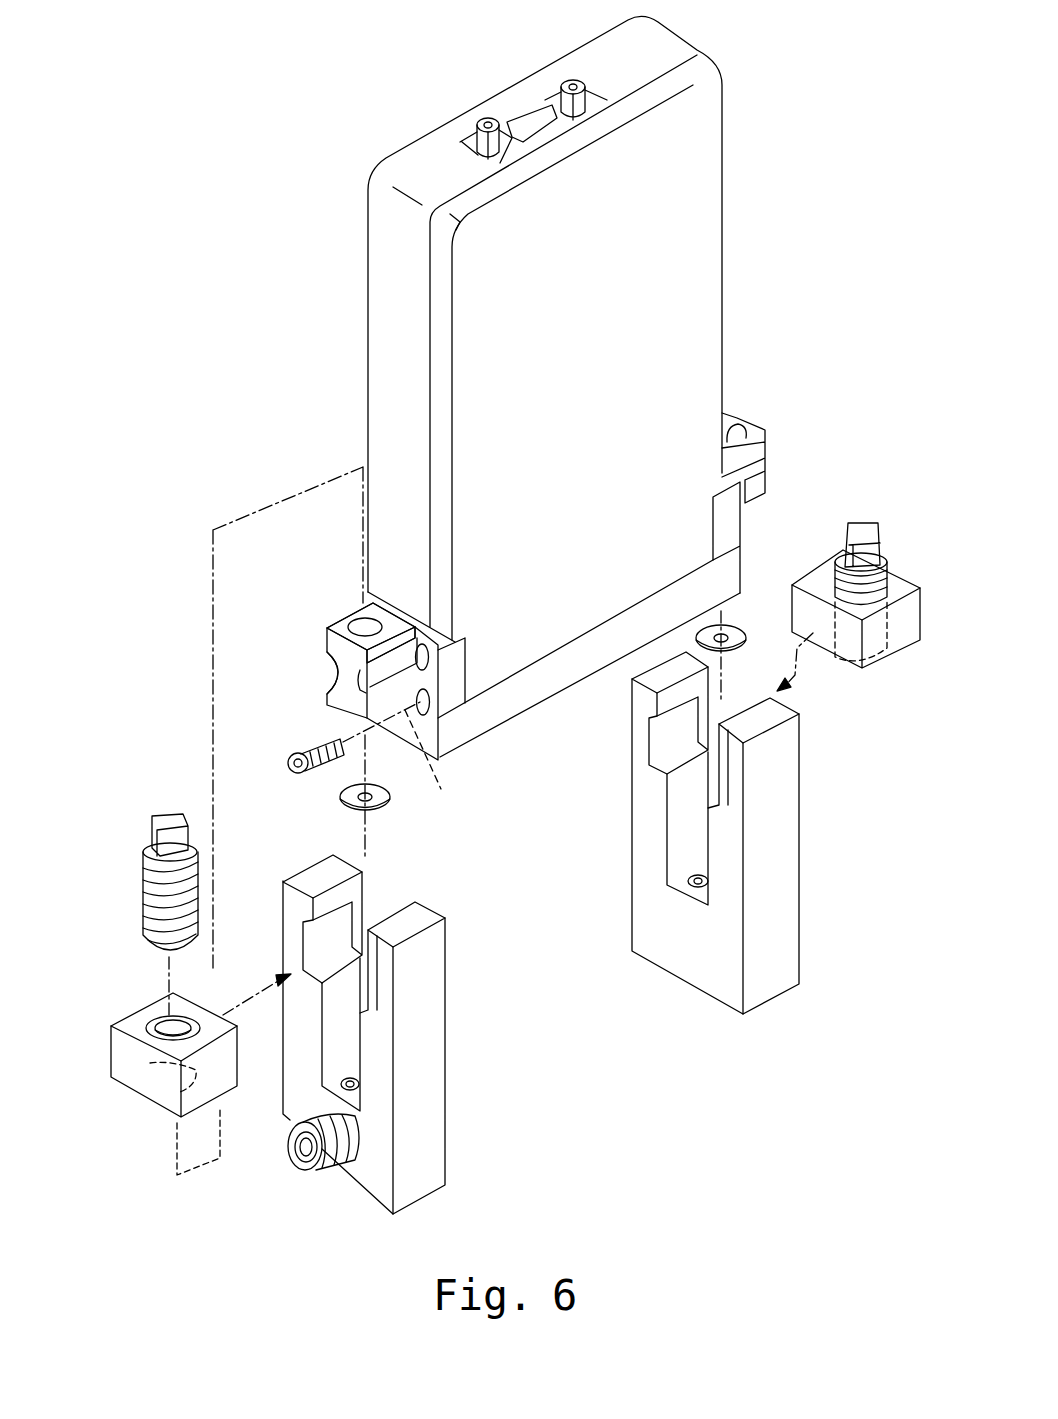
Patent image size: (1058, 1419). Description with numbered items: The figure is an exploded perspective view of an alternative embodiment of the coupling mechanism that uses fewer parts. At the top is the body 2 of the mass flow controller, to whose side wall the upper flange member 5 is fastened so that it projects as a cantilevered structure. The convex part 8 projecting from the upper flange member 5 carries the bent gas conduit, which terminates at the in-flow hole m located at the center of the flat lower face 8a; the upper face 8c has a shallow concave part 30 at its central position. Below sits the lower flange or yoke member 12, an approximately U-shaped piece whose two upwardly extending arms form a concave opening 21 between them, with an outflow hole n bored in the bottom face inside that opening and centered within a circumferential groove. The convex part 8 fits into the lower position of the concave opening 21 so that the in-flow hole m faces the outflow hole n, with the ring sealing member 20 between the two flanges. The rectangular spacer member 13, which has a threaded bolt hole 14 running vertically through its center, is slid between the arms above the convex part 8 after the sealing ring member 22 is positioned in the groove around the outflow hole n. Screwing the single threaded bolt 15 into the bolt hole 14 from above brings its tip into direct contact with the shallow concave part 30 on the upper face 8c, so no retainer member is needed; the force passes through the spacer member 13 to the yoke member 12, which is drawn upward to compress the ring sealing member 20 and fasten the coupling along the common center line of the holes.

The body 2 is at (700, 212).
The upper flange member 5 is at (312, 645).
The convex part 8 is at (335, 680).
The lower face 8a is at (337, 703).
The upper face 8c is at (340, 627).
The shallow concave part 30 is at (363, 622).
The in-flow hole m is at (443, 762).
The ring sealing member 20 is at (392, 805).
The lower flange or yoke member 12 is at (361, 1037).
The concave opening 21 is at (335, 1040).
The outflow hole n is at (360, 1086).
The sealing ring member 22 is at (359, 1105).
The spacer member 13 is at (115, 1080).
The bolt hole 14 is at (163, 1024).
The threaded bolt 15 is at (142, 881).